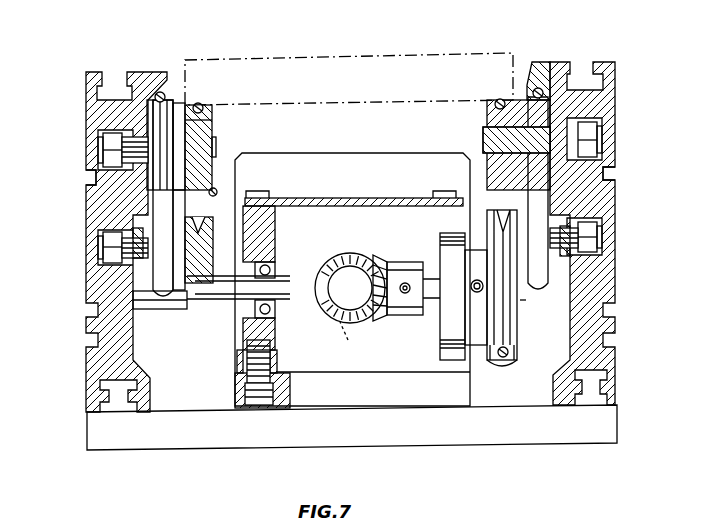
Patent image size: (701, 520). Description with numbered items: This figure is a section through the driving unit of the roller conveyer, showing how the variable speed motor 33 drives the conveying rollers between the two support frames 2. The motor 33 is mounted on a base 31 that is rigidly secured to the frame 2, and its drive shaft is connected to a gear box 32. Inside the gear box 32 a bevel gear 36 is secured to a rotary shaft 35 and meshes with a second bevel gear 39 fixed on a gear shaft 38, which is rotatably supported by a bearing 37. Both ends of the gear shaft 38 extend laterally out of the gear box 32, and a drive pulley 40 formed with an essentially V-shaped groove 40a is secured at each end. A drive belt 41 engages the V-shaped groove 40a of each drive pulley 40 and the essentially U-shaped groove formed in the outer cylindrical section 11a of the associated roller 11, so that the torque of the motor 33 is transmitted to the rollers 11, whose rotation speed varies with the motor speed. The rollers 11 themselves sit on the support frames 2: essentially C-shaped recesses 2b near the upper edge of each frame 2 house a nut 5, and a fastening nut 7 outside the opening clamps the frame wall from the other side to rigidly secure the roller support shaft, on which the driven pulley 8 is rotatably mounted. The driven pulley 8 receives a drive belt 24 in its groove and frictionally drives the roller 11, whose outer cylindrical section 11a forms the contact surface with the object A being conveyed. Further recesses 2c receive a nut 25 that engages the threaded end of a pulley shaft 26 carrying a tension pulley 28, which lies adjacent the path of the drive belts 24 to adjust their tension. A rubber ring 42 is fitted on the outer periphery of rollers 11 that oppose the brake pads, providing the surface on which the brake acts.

The support frame 2 is at (86, 367).
The recess 2b is at (108, 153).
The recess 2c is at (105, 250).
The nut 5 is at (105, 118).
The fastening nut 7 is at (100, 178).
The driven pulley 8 is at (171, 96).
The roller 11 is at (218, 128).
The outer cylindrical section 11a is at (203, 108).
The drive belt 24 is at (160, 93).
The nut 25 is at (127, 257).
The pulley shaft 26 is at (140, 232).
The tension pulley 28 is at (157, 286).
The base 31 is at (416, 440).
The gear box 32 is at (378, 198).
The variable speed motor 33 is at (352, 152).
The rotary shaft 35 is at (346, 342).
The bevel gear 36 is at (346, 253).
The bearing 37 is at (284, 318).
The gear shaft 38 is at (298, 284).
The bevel gear 39 is at (384, 262).
The drive pulley 40 is at (188, 350).
The V-shaped groove 40a is at (184, 280).
The drive belt 41 is at (215, 190).
The rubber ring 42 is at (531, 305).
The object to be conveyed A is at (375, 56).